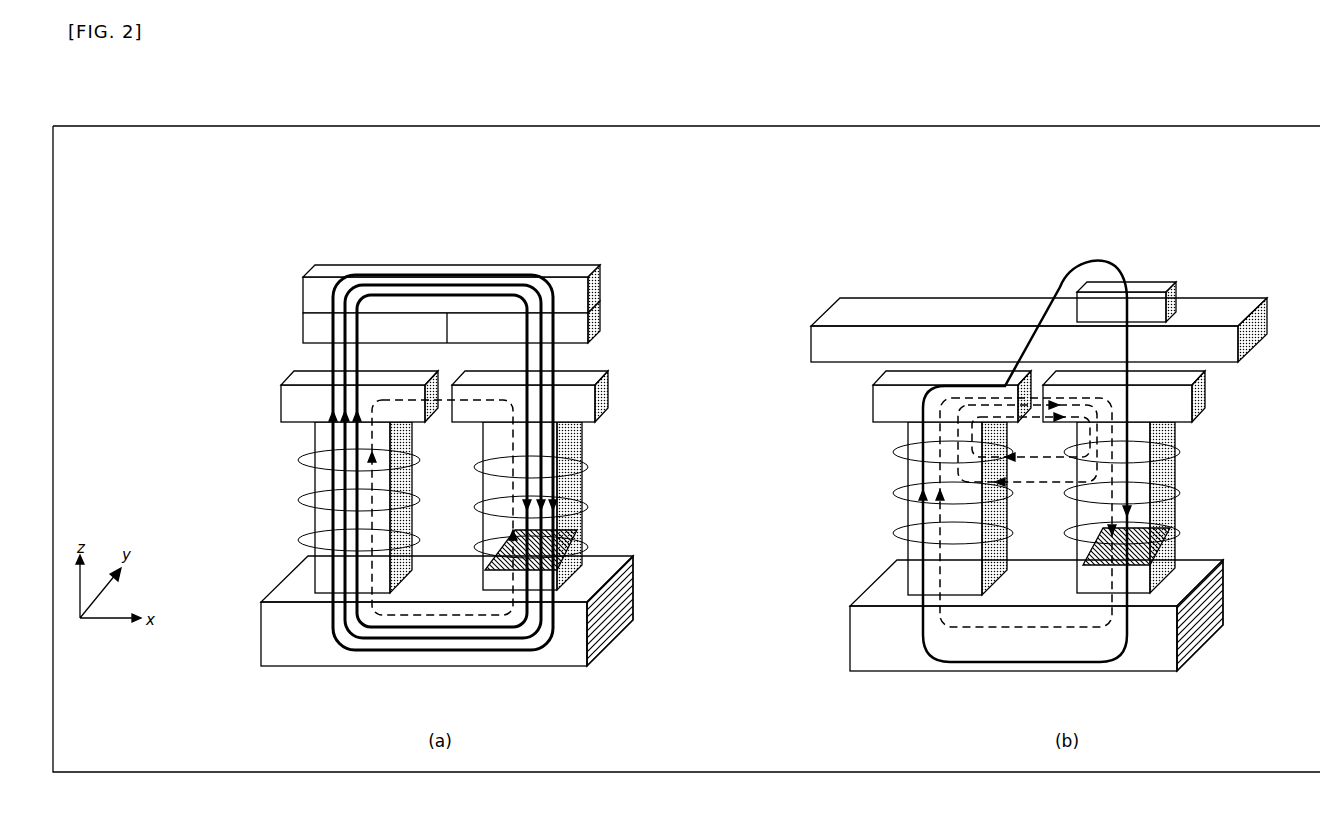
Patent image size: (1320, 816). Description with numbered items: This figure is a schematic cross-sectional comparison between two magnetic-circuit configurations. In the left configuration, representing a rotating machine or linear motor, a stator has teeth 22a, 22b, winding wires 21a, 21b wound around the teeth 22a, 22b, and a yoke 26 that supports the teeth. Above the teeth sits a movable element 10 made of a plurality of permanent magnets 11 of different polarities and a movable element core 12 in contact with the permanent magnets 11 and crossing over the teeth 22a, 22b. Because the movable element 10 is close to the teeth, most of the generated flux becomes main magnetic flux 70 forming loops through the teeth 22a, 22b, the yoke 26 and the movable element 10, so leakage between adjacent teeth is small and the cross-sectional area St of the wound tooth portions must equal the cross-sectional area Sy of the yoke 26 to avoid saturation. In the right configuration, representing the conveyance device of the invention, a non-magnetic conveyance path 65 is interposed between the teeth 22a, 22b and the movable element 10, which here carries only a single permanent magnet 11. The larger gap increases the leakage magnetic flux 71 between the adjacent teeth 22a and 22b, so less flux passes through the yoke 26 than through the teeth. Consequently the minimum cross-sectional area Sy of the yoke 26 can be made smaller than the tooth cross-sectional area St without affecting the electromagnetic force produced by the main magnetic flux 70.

The movable element 10 is at (302, 246).
The permanent magnets 11 is at (303, 330).
The movable element core 12 is at (303, 283).
The winding wire 21a is at (308, 455).
The winding wire 21b is at (588, 510).
The teeth 22a is at (300, 387).
The teeth 22b is at (608, 393).
The yoke 26 is at (583, 666).
The conveyance path 65 is at (888, 305).
The main magnetic flux 70 is at (385, 275).
The leakage magnetic flux 71 is at (440, 400).
The cross-sectional area of the teeth St is at (560, 535).
The cross-sectional area of the yoke Sy is at (620, 602).